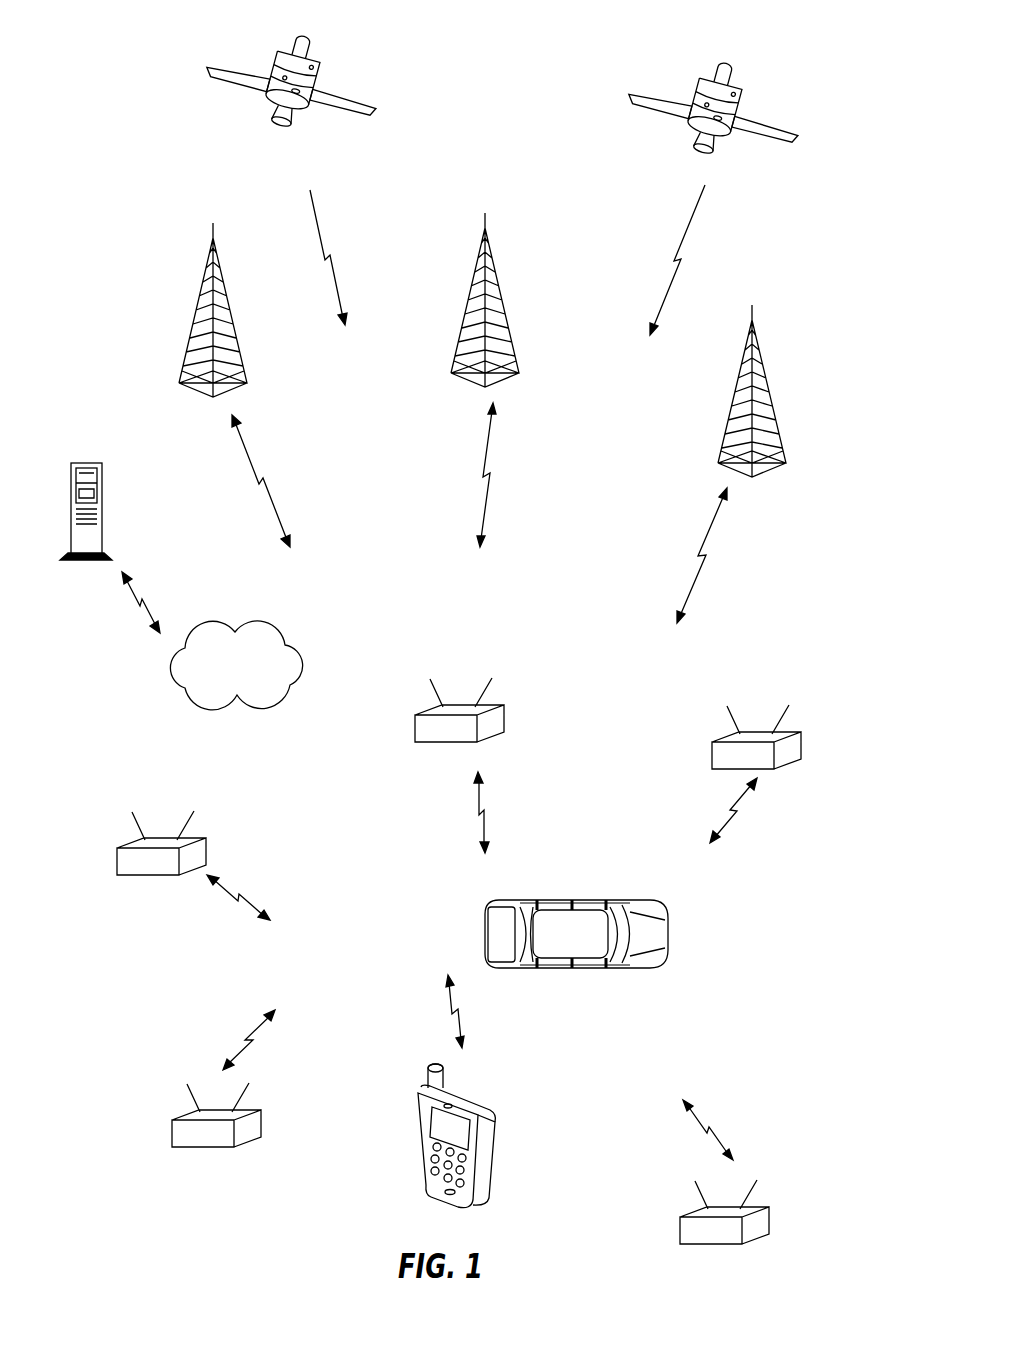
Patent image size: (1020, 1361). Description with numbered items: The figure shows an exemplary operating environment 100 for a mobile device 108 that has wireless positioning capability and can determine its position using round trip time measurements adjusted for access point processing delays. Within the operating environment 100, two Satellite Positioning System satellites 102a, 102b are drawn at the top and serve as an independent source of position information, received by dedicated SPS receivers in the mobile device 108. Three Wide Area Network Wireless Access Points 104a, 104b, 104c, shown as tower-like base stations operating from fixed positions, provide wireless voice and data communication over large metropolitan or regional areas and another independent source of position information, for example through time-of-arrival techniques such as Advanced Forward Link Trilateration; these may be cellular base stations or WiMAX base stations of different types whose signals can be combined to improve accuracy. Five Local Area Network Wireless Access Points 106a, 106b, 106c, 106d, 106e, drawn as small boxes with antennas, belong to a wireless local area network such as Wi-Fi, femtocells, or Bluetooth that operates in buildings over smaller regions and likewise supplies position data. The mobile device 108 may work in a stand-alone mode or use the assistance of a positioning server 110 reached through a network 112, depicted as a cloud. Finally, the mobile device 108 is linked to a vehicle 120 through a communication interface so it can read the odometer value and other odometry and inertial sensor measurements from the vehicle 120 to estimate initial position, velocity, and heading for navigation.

The operating environment 100 is at (140, 73).
The Satellite Positioning System satellite 102a is at (302, 66).
The Satellite Positioning System satellite 102b is at (717, 60).
The Wide Area Network Wireless Access Point 104a is at (212, 228).
The Wide Area Network Wireless Access Point 104b is at (486, 214).
The Wide Area Network Wireless Access Point 104c is at (753, 306).
The Local Area Network Wireless Access Point 106a is at (205, 840).
The Local Area Network Wireless Access Point 106b is at (505, 707).
The Local Area Network Wireless Access Point 106c is at (712, 743).
The Local Area Network Wireless Access Point 106d is at (260, 1112).
The Local Area Network Wireless Access Point 106e is at (680, 1217).
The mobile device 108 is at (493, 1117).
The positioning server 110 is at (83, 463).
The network 112 is at (257, 622).
The vehicle 120 is at (573, 900).